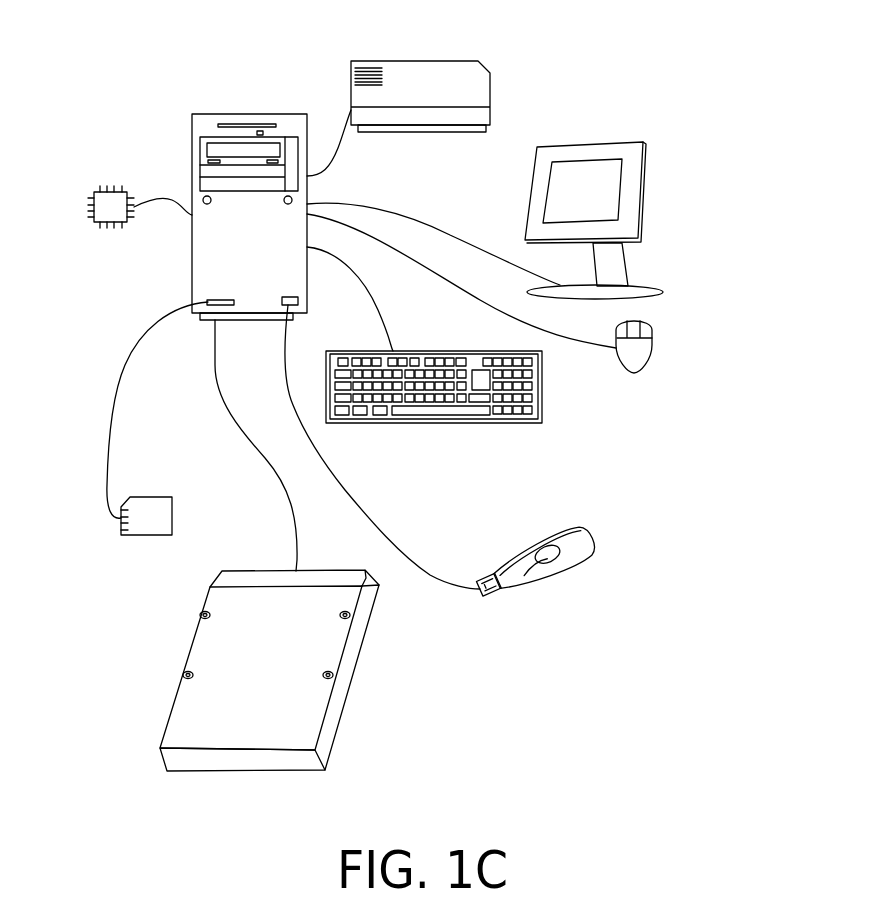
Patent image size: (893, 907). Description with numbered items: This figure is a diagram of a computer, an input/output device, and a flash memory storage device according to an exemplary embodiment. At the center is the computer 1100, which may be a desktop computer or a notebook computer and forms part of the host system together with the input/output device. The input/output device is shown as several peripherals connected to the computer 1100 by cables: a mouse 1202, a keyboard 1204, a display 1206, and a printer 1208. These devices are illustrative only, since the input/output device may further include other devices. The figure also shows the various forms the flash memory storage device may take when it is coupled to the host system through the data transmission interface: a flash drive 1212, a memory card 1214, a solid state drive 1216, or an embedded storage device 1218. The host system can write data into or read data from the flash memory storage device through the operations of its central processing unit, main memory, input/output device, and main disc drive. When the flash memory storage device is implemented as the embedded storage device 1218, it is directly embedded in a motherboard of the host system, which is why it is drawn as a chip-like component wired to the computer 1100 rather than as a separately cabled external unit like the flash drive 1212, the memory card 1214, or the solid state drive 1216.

The computer 1100 is at (250, 114).
The mouse 1202 is at (653, 352).
The keyboard 1204 is at (543, 398).
The display 1206 is at (598, 147).
The printer 1208 is at (416, 61).
The flash drive 1212 is at (532, 553).
The memory card 1214 is at (172, 506).
The solid state drive 1216 is at (330, 556).
The embedded storage device 1218 is at (97, 192).